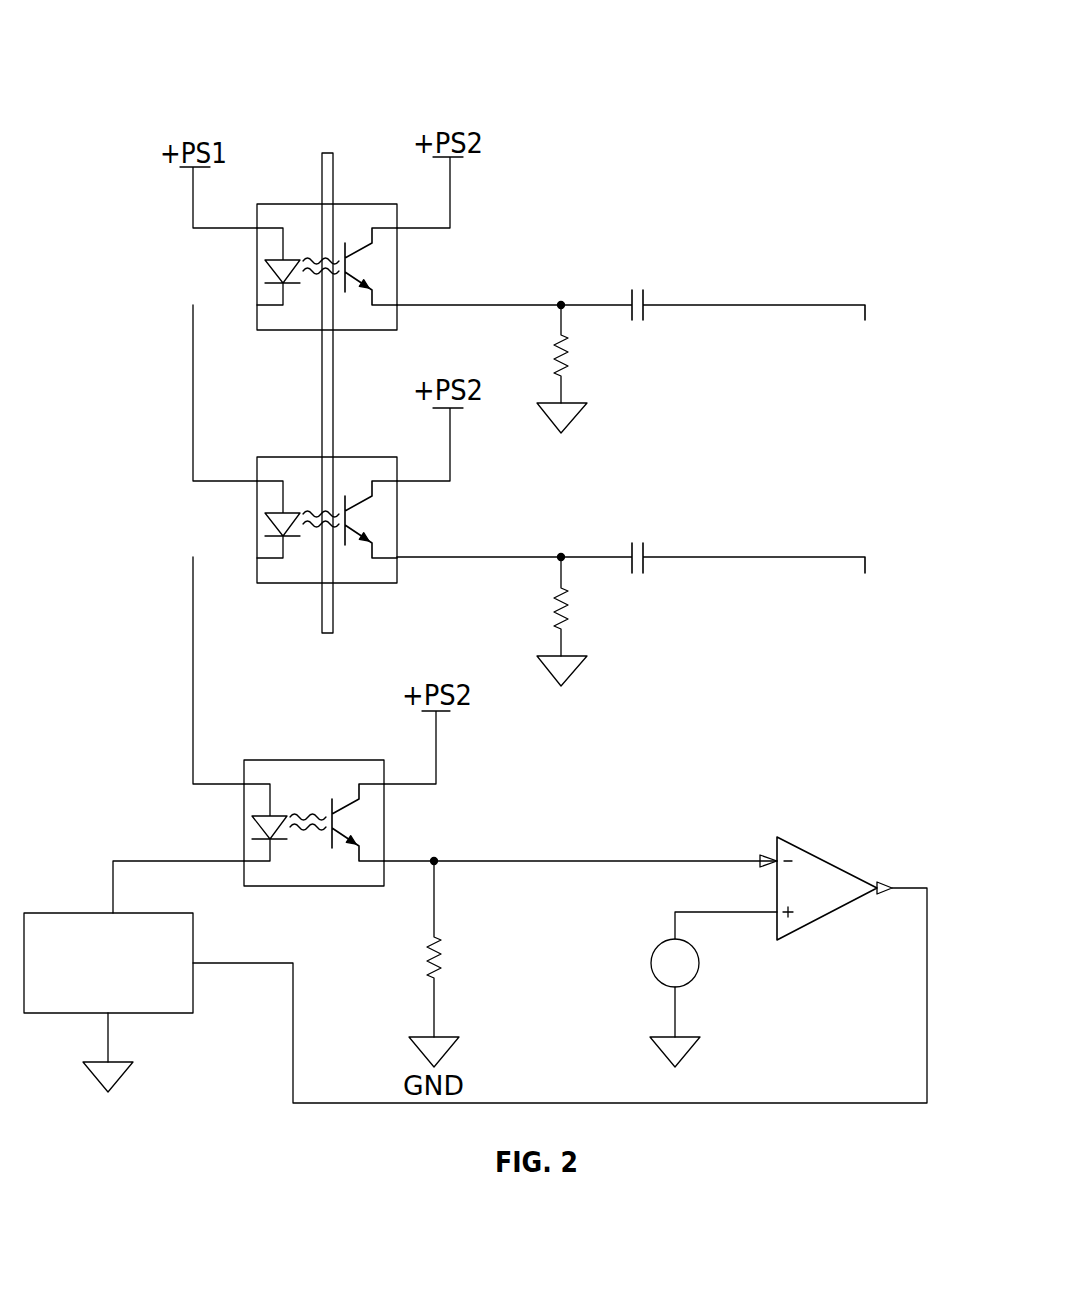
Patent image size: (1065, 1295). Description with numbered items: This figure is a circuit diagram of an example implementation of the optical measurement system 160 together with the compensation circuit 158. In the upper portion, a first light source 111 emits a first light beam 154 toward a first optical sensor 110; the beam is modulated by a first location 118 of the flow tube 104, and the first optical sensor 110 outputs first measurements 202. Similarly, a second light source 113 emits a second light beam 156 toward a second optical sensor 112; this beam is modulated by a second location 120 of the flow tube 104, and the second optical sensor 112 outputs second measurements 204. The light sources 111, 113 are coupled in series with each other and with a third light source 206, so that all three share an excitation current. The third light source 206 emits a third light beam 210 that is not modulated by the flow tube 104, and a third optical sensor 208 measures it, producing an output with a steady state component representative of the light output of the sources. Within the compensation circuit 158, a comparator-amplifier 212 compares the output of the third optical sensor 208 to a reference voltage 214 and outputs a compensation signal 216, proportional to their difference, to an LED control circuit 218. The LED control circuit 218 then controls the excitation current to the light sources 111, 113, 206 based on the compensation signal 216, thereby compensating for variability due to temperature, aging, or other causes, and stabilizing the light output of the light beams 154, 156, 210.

The optical measurement system 160 is at (139, 45).
The flow tube 104 is at (322, 180).
The first location 118 is at (327, 232).
The second location 120 is at (332, 488).
The first light source 111 is at (278, 271).
The second light source 113 is at (278, 525).
The first optical sensor 110 is at (347, 272).
The second optical sensor 112 is at (347, 525).
The first light beam 154 is at (317, 270).
The second light beam 156 is at (317, 524).
The first measurements 202 is at (849, 299).
The second measurements 204 is at (849, 552).
The third light source 206 is at (262, 827).
The third optical sensor 208 is at (340, 832).
The third light beam 210 is at (308, 828).
The comparator-amplifier 212 is at (821, 854).
The reference voltage 214 is at (651, 963).
The compensation signal 216 is at (942, 886).
The LED control circuit 218 is at (100, 913).
The compensation circuit 158 is at (814, 724).